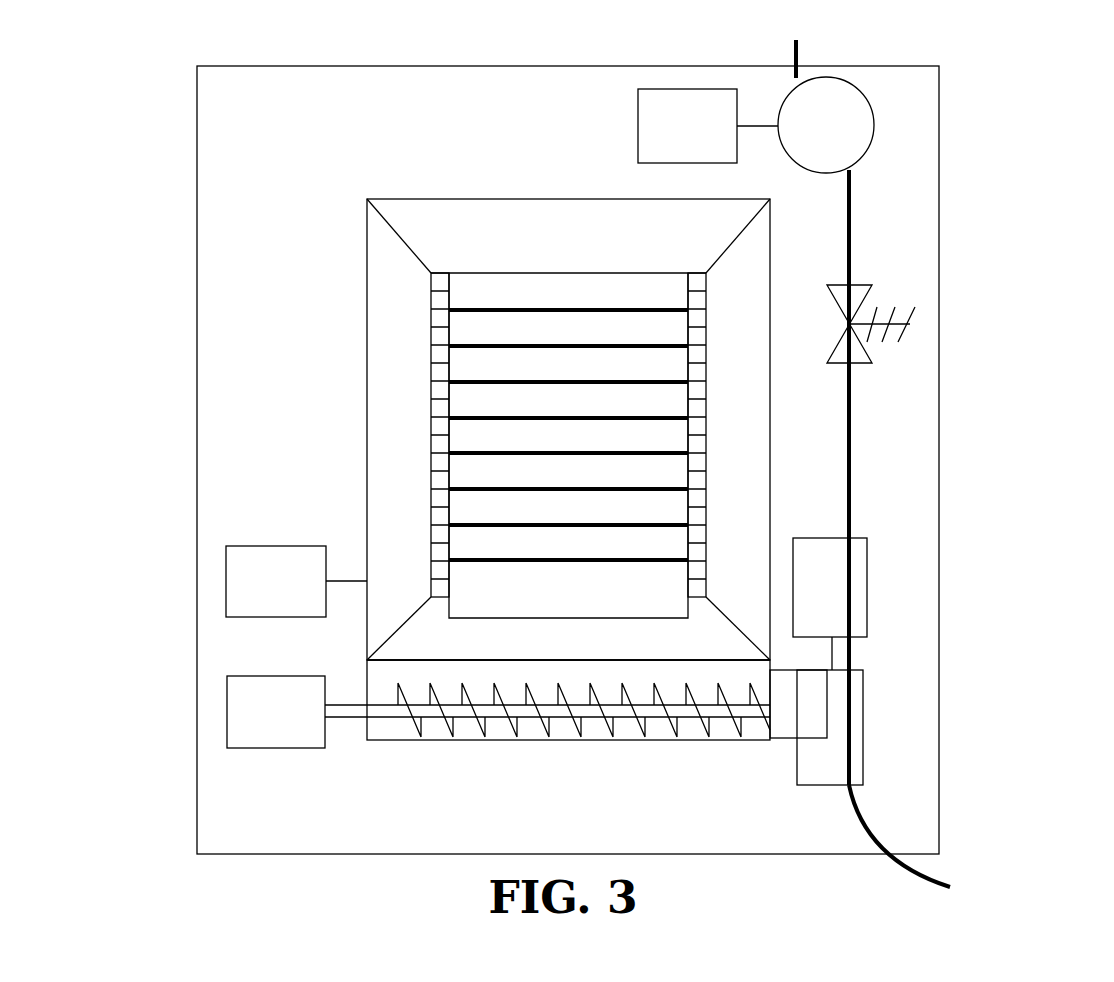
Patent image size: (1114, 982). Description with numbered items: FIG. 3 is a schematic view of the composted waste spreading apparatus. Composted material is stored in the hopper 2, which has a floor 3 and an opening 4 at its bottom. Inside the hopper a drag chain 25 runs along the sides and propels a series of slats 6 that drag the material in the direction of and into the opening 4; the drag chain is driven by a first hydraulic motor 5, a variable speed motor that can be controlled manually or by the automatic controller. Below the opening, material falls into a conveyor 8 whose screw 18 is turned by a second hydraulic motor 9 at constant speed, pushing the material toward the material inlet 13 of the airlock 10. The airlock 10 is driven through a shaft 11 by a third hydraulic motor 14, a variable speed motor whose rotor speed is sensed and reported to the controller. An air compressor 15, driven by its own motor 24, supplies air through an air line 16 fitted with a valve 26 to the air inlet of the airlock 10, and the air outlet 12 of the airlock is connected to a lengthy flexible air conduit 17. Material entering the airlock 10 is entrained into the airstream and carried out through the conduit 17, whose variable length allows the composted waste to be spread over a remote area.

The drying chamber 2 is at (557, 238).
The tray frame 3 is at (485, 368).
The hopper 4 is at (503, 608).
The motor 5 is at (226, 581).
The shelves 6 is at (442, 472).
The screw conveyor trough 8 is at (627, 728).
The conveyor motor 9 is at (227, 712).
The grinder 10 is at (850, 727).
The drive shaft 11 is at (853, 667).
The inlet pipe 12 is at (857, 788).
The feed housing 13 is at (812, 700).
The grinder motor 14 is at (867, 557).
The pump 15 is at (874, 132).
The pipe 16 is at (852, 422).
The outlet pipe 17 is at (870, 830).
The screw 18 is at (438, 741).
The pump motor 24 is at (638, 127).
The rack 25 is at (497, 345).
The valve 26 is at (852, 350).